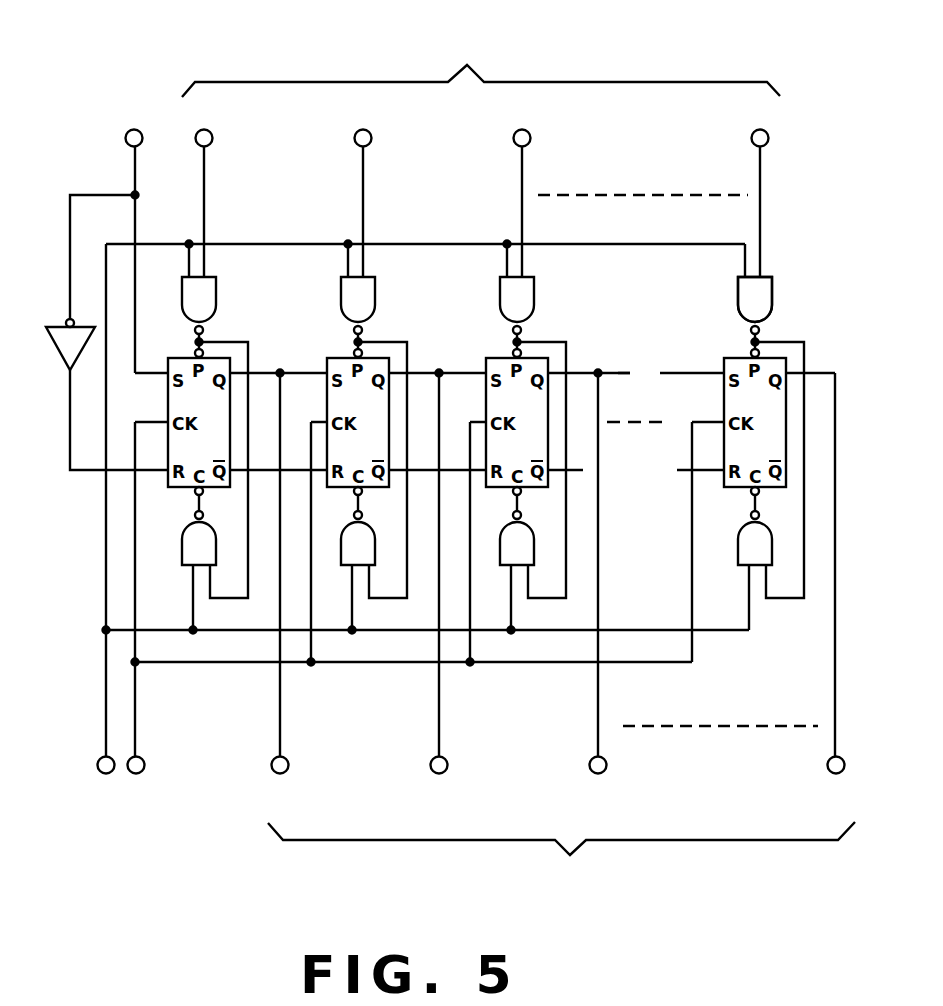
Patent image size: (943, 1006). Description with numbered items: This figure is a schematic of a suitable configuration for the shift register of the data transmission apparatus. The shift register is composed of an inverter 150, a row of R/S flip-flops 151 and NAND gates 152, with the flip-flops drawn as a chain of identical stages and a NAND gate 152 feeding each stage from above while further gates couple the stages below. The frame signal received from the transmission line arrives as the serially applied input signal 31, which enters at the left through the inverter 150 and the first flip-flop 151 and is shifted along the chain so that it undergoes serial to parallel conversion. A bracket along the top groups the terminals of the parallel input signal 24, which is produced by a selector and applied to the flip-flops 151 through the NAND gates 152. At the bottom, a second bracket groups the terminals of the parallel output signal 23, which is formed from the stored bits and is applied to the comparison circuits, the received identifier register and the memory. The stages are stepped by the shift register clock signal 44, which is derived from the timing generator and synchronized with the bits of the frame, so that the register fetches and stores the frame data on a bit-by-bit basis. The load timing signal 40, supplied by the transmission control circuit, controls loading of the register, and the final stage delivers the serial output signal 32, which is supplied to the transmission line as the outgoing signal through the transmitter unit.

The parallel output signal 23 is at (568, 853).
The parallel input signal 24 is at (465, 62).
The input signal 31 is at (126, 132).
The serial output signal 32 is at (826, 771).
The load timing signal 40 is at (104, 754).
The shift register clock signal 44 is at (140, 754).
The inverter 150 is at (66, 325).
The R/S flip-flops 151 is at (735, 355).
The NAND gates 152 is at (748, 298).